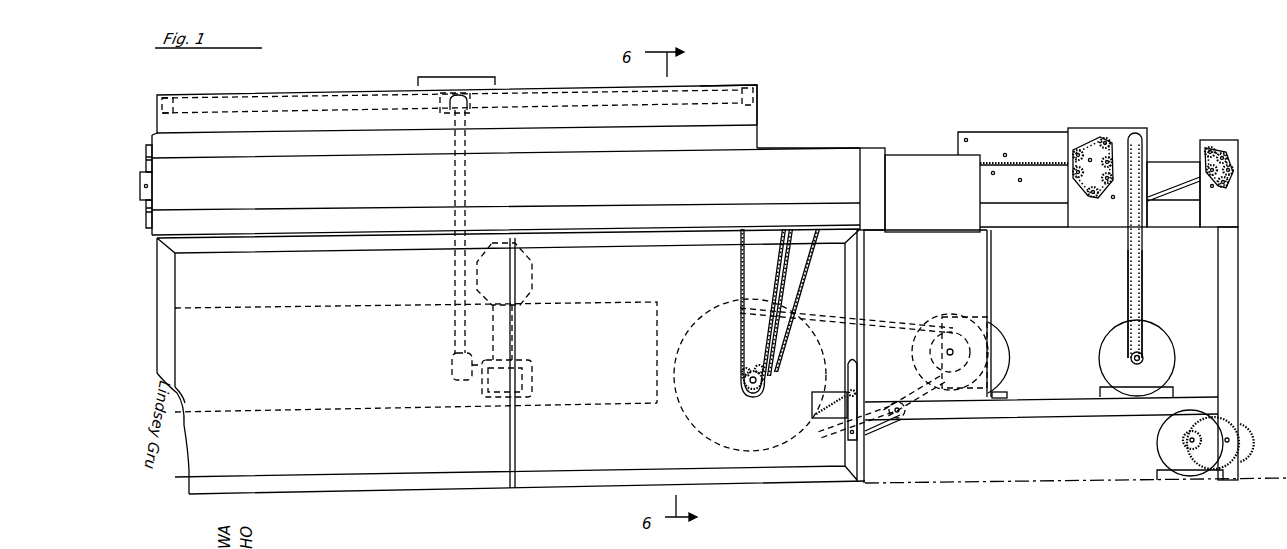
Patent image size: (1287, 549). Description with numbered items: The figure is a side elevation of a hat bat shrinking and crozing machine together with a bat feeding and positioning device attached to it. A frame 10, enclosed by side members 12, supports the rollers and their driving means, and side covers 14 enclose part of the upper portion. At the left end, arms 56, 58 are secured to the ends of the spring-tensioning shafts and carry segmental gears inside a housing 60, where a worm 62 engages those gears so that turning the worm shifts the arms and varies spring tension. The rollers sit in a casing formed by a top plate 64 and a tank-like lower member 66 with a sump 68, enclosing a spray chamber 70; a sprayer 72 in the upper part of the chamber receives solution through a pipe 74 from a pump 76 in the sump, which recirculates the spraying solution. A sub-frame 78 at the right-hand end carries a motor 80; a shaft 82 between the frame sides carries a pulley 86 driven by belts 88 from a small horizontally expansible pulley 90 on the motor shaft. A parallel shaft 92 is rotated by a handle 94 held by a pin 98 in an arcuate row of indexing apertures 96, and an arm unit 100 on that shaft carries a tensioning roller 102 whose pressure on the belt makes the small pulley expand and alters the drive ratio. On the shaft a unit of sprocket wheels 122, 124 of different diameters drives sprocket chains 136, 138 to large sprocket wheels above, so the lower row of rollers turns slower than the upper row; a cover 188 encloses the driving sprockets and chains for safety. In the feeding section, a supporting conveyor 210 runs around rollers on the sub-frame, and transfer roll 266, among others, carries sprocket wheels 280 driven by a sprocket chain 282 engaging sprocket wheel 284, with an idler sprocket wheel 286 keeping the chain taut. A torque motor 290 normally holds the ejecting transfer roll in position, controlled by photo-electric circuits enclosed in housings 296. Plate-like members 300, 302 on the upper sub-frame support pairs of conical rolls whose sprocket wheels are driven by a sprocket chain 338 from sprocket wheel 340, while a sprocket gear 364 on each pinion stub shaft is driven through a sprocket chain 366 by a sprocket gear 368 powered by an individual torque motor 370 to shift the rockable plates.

The frame 10 is at (558, 482).
The side members 12 is at (445, 467).
The side covers 14 is at (813, 150).
The arm 56 is at (146, 152).
The arm 58 is at (146, 212).
The housing 60 is at (140, 178).
The worm 62 is at (144, 187).
The top plate 64 is at (303, 93).
The tank-like lower member 66 is at (328, 307).
The sump 68 is at (353, 412).
The spray chamber 70 is at (705, 88).
The sprayer 72 is at (512, 98).
The pipe 74 is at (453, 276).
The pump 76 is at (532, 373).
The sub-frame 78 is at (1020, 420).
The motor 80 is at (942, 317).
The shaft 82 is at (748, 386).
The pulley 86 is at (692, 427).
The belts 88 is at (869, 320).
The pulley 90 is at (957, 337).
The shaft 92 is at (842, 437).
The handle 94 is at (847, 375).
The indexing apertures 96 is at (820, 413).
The pin 98 is at (845, 391).
The arm unit 100 is at (880, 432).
The tensioning roller 102 is at (903, 416).
The sprocket wheel 122 is at (757, 365).
The sprocket wheel 124 is at (742, 373).
The sprocket chain 136 is at (742, 268).
The sprocket chain 138 is at (797, 282).
The cover 188 is at (758, 158).
The supporting conveyor 210 is at (1185, 192).
The transfer roll 266 is at (988, 163).
The sprocket wheels 280 is at (1208, 150).
The sprocket chain 282 is at (1222, 154).
The sprocket wheel 284 is at (1206, 150).
The idler sprocket wheel 286 is at (1233, 168).
The torque motor 290 is at (1160, 443).
The housings 296 is at (897, 155).
The plate-like member 300 is at (1077, 130).
The plate-like member 302 is at (967, 133).
The sprocket chain 338 is at (1090, 140).
The sprocket wheel 340 is at (1088, 191).
The sprocket gear 364 is at (1134, 133).
The sprocket chain 366 is at (1130, 277).
The sprocket gear 368 is at (1143, 355).
The torque motor 370 is at (1113, 335).